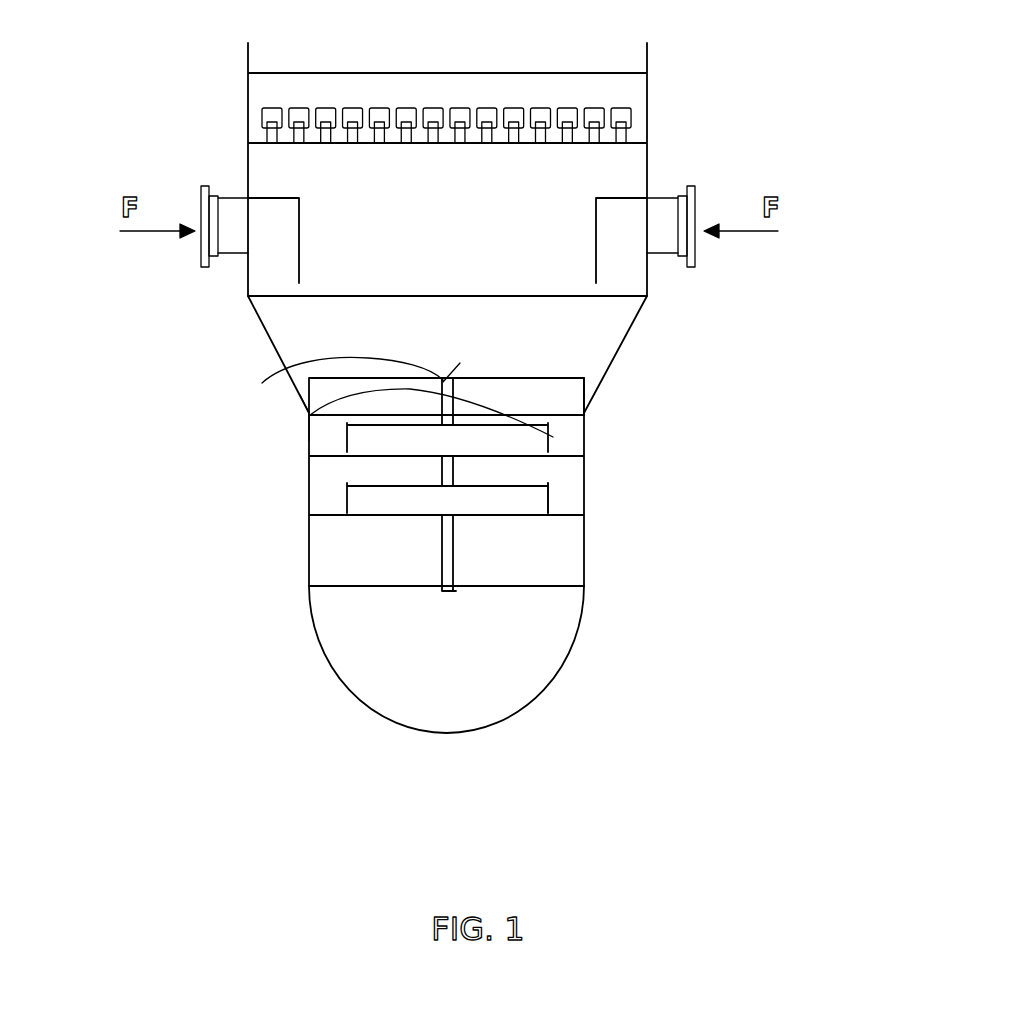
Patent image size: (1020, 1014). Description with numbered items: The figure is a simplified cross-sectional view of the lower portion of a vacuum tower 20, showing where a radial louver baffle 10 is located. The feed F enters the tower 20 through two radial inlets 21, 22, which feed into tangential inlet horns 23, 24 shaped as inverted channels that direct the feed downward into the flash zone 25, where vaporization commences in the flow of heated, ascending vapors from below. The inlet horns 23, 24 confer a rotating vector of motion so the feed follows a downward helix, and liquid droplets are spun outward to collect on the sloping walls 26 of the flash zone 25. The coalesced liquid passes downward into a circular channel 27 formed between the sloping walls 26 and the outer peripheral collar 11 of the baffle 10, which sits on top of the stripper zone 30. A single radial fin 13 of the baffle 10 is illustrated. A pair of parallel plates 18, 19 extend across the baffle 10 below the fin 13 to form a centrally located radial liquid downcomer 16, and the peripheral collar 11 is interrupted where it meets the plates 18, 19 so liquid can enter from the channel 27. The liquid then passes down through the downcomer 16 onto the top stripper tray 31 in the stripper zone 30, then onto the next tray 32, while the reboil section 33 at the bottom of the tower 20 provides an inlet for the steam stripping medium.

The vacuum tower 20 is at (735, 77).
The radial inlet 21 is at (218, 198).
The radial inlet 22 is at (694, 185).
The tangential inlet horn 23 is at (270, 252).
The tangential inlet horn 24 is at (623, 260).
The flash zone 25 is at (583, 328).
The sloping walls 26 is at (262, 325).
The baffle 10 is at (530, 387).
The peripheral collar 11 is at (587, 392).
The radial fin 13 is at (262, 383).
The circular channel 27 is at (306, 394).
The parallel plate 18 is at (556, 434).
The stripper zone 30 is at (575, 484).
The downcomer 16 is at (458, 400).
The parallel plate 19 is at (309, 418).
The top stripper tray 31 is at (347, 435).
The stripper tray 32 is at (347, 497).
The reboil section 33 is at (512, 654).